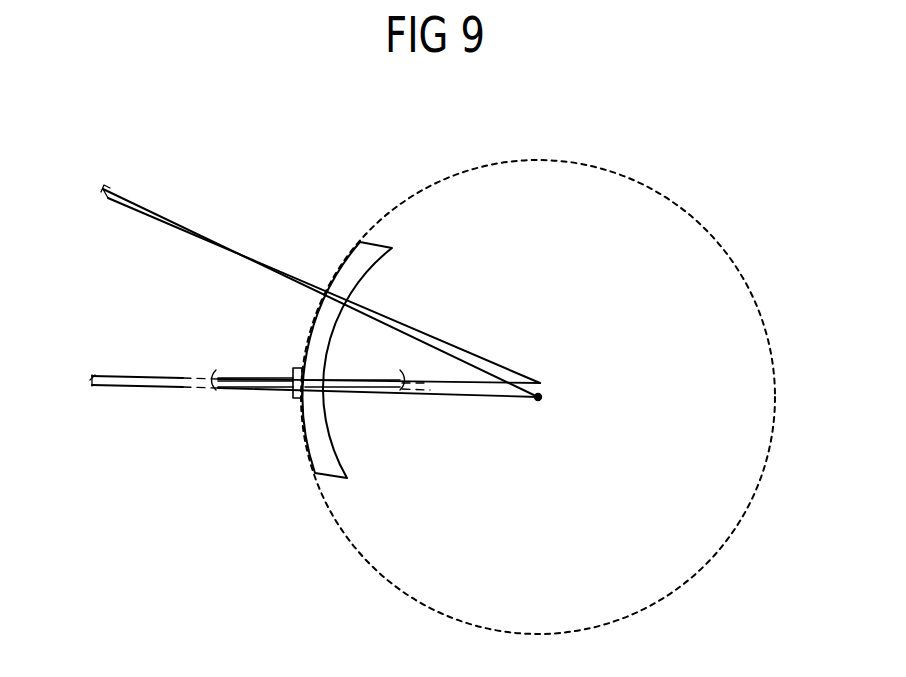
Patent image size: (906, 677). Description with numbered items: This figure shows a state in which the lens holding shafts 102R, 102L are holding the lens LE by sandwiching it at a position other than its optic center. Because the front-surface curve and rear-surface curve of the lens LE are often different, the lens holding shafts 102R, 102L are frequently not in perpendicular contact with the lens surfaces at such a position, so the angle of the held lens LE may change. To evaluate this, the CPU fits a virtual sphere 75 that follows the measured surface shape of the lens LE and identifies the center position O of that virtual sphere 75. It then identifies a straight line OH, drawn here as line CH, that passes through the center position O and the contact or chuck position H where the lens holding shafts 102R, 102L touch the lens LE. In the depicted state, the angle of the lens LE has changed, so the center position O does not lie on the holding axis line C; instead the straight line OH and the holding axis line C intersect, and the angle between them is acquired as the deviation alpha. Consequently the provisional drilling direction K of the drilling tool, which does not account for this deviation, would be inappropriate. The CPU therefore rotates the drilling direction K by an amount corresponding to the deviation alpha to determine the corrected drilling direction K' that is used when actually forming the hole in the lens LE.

The virtual sphere 75 is at (540, 160).
The center position of the virtual sphere O is at (540, 402).
The lens LE is at (370, 243).
The drilling direction K' is at (320, 270).
The drilling direction K is at (324, 290).
The straight line CH is at (120, 374).
The holding axis line C is at (138, 389).
The lens holding shaft 102L is at (242, 389).
The lens holding shaft 102R is at (386, 389).
The contact position H is at (293, 374).